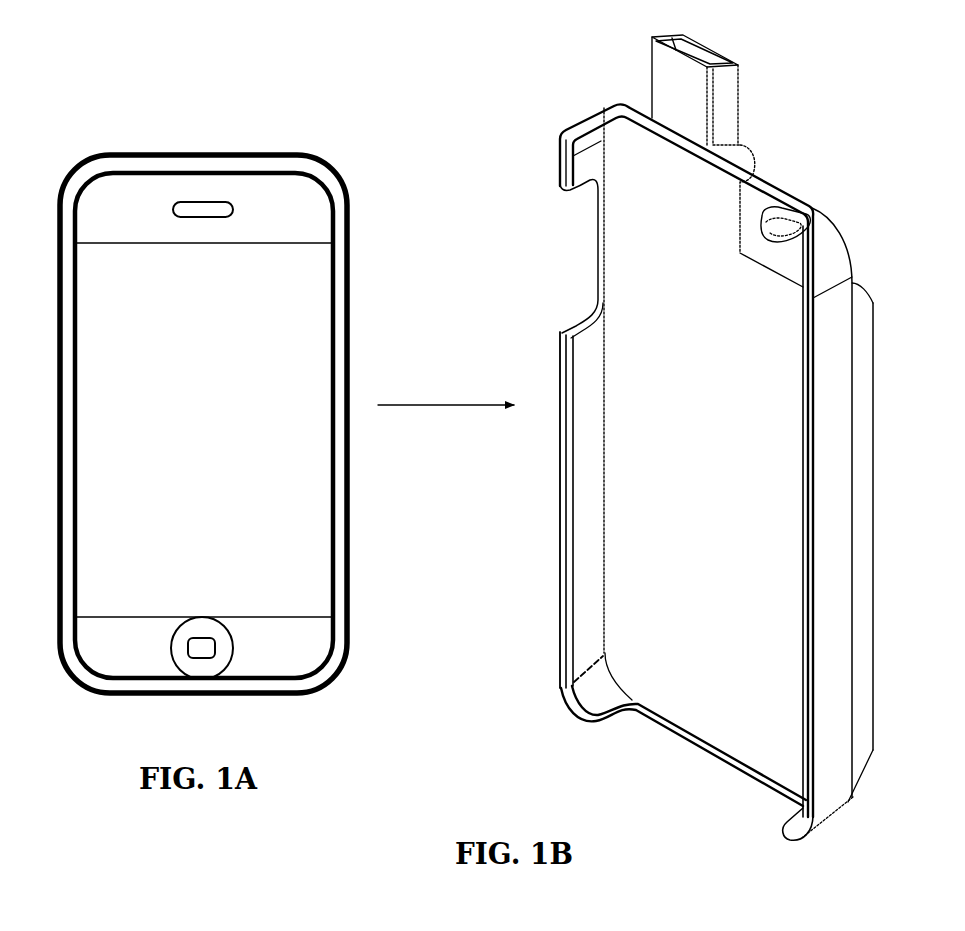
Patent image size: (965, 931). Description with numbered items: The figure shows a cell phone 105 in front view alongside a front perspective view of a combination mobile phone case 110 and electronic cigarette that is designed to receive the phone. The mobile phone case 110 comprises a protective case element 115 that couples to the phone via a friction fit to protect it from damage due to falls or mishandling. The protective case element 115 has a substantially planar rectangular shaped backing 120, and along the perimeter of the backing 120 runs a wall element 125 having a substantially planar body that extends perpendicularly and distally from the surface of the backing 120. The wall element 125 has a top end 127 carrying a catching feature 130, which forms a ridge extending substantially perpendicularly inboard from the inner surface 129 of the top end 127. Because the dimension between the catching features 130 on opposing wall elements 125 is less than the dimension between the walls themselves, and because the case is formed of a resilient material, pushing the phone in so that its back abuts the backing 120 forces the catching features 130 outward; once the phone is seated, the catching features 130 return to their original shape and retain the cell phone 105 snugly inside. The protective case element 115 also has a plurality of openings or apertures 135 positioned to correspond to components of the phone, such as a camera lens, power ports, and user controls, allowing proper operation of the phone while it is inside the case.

In FIG. 1A, the cell phone 105 is at (42, 154).
In FIG. 1B, the mobile phone case 110 is at (683, 443).
In FIG. 1B, the protective case element 115 is at (862, 236).
In FIG. 1B, the rectangular shaped backing 120 is at (773, 527).
In FIG. 1B, the wall element 125 is at (580, 497).
In FIG. 1B, the top end 127 is at (830, 810).
In FIG. 1B, the inner surface 129 is at (596, 434).
In FIG. 1B, the catching feature 130 is at (606, 655).
In FIG. 1B, the openings or apertures 135 is at (565, 253).